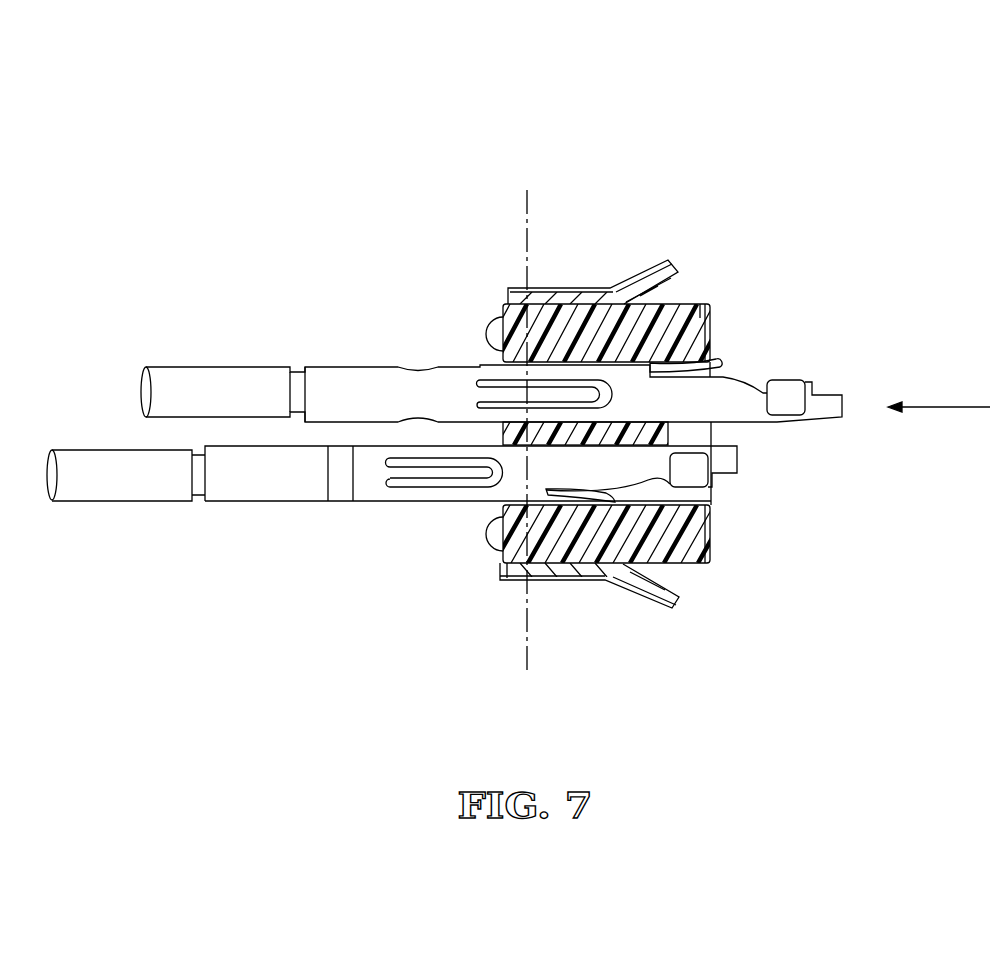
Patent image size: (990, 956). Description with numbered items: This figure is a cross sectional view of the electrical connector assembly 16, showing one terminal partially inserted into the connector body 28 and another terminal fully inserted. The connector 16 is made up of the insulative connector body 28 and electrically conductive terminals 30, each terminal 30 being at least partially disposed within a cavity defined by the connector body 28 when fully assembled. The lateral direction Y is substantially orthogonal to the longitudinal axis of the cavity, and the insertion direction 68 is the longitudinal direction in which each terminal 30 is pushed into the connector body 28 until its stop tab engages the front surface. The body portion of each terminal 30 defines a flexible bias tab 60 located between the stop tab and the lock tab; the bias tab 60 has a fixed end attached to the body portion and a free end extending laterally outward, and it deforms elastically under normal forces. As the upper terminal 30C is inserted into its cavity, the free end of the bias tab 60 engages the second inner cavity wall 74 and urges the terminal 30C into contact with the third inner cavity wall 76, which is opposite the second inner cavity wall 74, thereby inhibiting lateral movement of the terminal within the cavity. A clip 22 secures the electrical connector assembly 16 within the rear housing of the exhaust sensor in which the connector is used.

The electrical connector assembly 16 is at (490, 163).
The clip 22 is at (658, 300).
The connector body 28 is at (568, 312).
The terminal 30 is at (382, 472).
The upper terminal 30C is at (465, 392).
The bias tab 60 is at (722, 360).
The insertion direction 68 is at (950, 406).
The second inner cavity wall 74 is at (702, 312).
The third inner cavity wall 76 is at (619, 425).
The lateral direction Y is at (527, 645).